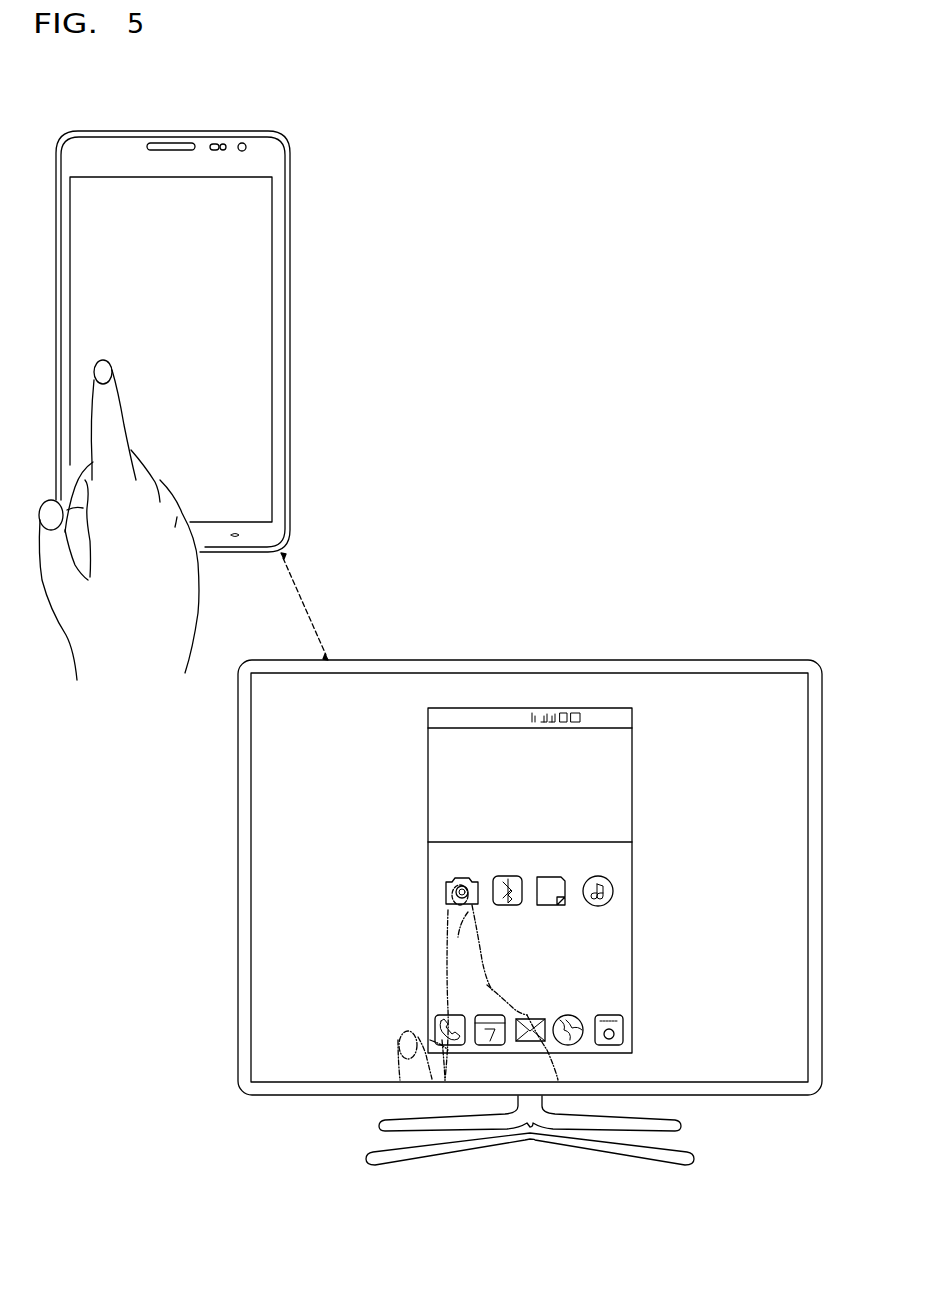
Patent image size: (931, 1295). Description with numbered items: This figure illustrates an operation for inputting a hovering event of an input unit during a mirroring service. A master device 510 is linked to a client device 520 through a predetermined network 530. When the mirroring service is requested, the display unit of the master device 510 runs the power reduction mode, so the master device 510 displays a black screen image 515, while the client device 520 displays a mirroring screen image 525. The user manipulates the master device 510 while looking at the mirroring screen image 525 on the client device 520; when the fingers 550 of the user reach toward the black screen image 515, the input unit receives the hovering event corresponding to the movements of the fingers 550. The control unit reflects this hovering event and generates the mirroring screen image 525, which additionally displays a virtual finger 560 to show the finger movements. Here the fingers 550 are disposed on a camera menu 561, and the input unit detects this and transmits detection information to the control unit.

The master device 510 is at (173, 131).
The black screen image 515 is at (265, 217).
The client device 520 is at (678, 659).
The mirroring screen image 525 is at (476, 717).
The predetermined network 530 is at (303, 603).
The fingers of the user 550 is at (68, 645).
The virtual finger 560 is at (448, 962).
The camera menu 561 is at (442, 898).